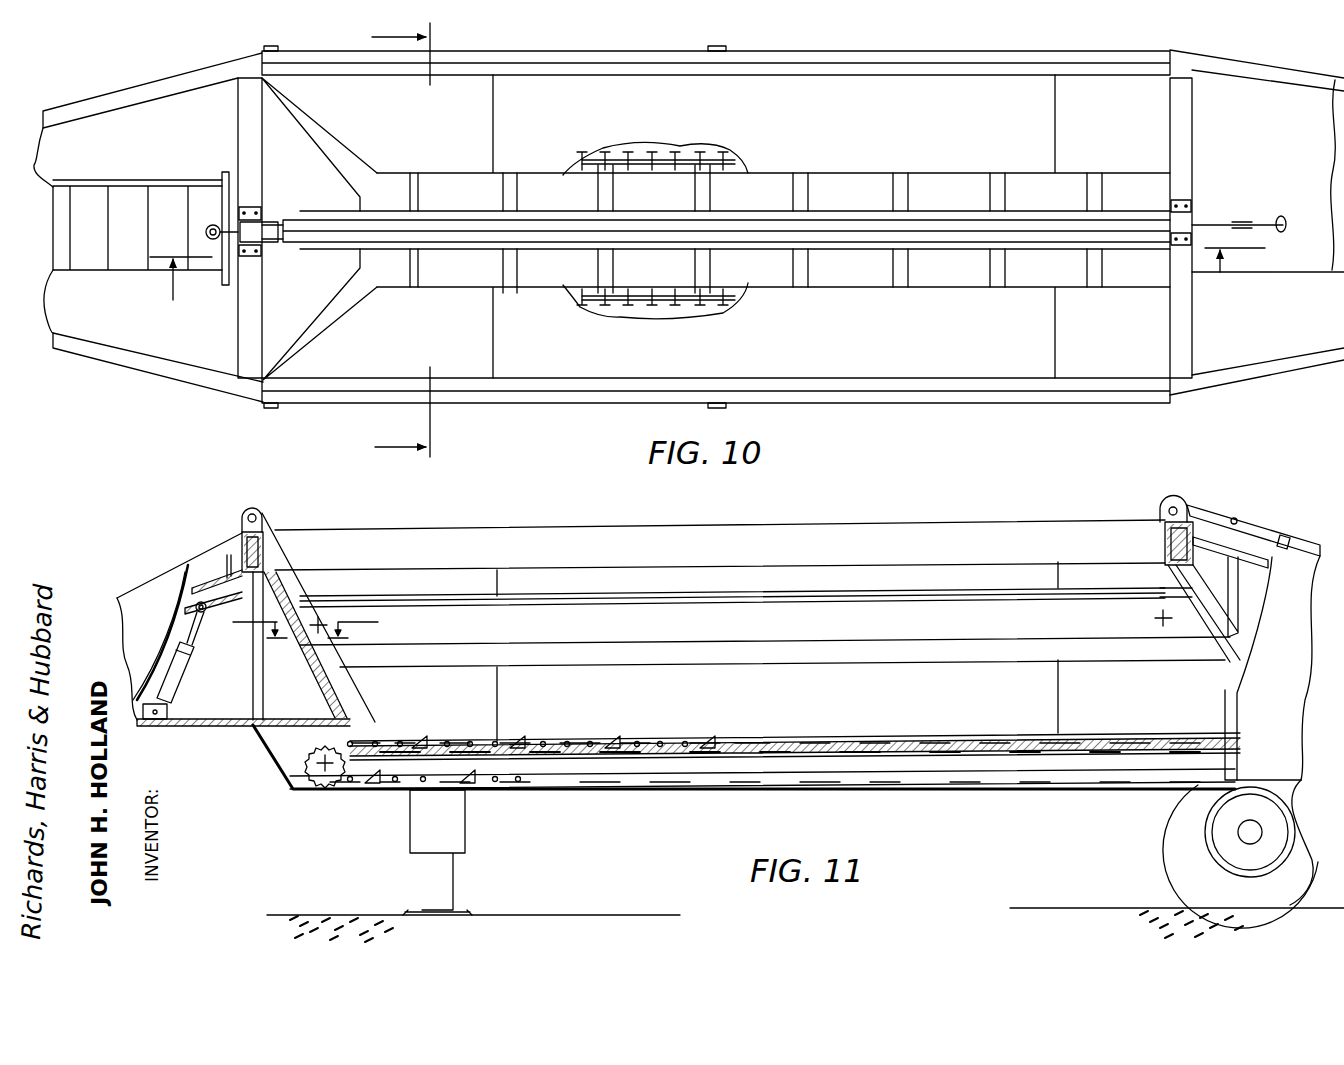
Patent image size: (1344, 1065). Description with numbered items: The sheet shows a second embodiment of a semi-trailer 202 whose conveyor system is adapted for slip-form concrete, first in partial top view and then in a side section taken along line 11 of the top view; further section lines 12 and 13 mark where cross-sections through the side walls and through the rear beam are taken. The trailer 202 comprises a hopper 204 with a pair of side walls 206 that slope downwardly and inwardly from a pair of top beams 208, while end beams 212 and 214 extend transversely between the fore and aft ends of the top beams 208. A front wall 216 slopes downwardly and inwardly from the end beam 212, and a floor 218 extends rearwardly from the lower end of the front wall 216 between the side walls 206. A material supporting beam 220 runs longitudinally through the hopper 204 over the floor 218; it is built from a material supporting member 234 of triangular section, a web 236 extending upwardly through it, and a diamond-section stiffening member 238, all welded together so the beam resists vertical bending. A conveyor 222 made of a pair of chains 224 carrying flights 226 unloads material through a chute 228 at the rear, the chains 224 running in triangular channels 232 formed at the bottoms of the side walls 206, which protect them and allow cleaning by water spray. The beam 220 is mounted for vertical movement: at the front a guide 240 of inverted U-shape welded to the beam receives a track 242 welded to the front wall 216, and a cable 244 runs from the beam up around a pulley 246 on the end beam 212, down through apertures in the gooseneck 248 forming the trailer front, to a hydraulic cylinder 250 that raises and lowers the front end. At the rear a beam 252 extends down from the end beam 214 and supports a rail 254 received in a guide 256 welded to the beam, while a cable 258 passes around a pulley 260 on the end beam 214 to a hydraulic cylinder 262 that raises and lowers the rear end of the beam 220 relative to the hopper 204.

In FIG. 10, the semi-trailer 202 is at (125, 85).
In FIG. 11, the semi-trailer 202 is at (155, 565).
In FIG. 10, the hopper 204 is at (470, 355).
In FIG. 11, the hopper 204 is at (420, 572).
In FIG. 10, the side walls 206 is at (540, 90).
In FIG. 11, the side walls 206 is at (758, 703).
In FIG. 10, the top beams 208 is at (968, 50).
In FIG. 11, the top beams 208 is at (458, 530).
In FIG. 10, the end beam 212 is at (252, 339).
In FIG. 11, the end beam 212 is at (240, 536).
In FIG. 10, the end beam 214 is at (1180, 328).
In FIG. 11, the end beam 214 is at (1195, 530).
In FIG. 10, the front wall 216 is at (285, 150).
In FIG. 11, the front wall 216 is at (330, 692).
In FIG. 10, the floor 218 is at (668, 275).
In FIG. 11, the floor 218 is at (645, 740).
In FIG. 10, the material supporting beam 220 is at (840, 208).
In FIG. 11, the material supporting beam 220 is at (665, 592).
In FIG. 10, the conveyor 222 is at (630, 145).
In FIG. 11, the conveyor 222 is at (470, 740).
In FIG. 10, the chains 224 is at (695, 157).
In FIG. 11, the chains 224 is at (553, 740).
In FIG. 10, the flights 226 is at (500, 268).
In FIG. 11, the flights 226 is at (520, 770).
In FIG. 10, the chute 228 is at (1295, 325).
In FIG. 11, the chute 228 is at (1240, 692).
In FIG. 11, the triangular channels 232 is at (905, 745).
In FIG. 11, the material supporting member 234 is at (502, 655).
In FIG. 11, the web 236 is at (656, 635).
In FIG. 11, the stiffening member 238 is at (795, 600).
In FIG. 11, the guide 240 is at (312, 612).
In FIG. 11, the track 242 is at (277, 585).
In FIG. 11, the cable 244 is at (285, 570).
In FIG. 11, the pulley 246 is at (251, 503).
In FIG. 11, the gooseneck 248 is at (190, 724).
In FIG. 11, the hydraulic cylinder 250 is at (165, 672).
In FIG. 11, the beam 252 is at (1210, 600).
In FIG. 11, the rail 254 is at (1170, 580).
In FIG. 11, the guide 256 is at (1228, 650).
In FIG. 11, the cable 258 is at (1160, 535).
In FIG. 11, the pulley 260 is at (1166, 500).
In FIG. 11, the hydraulic cylinder 262 is at (1298, 538).
In FIG. 10, the section line 11 is at (659, 247).
In FIG. 10, the section line 12 is at (386, 241).
In FIG. 11, the section line 13 is at (306, 624).